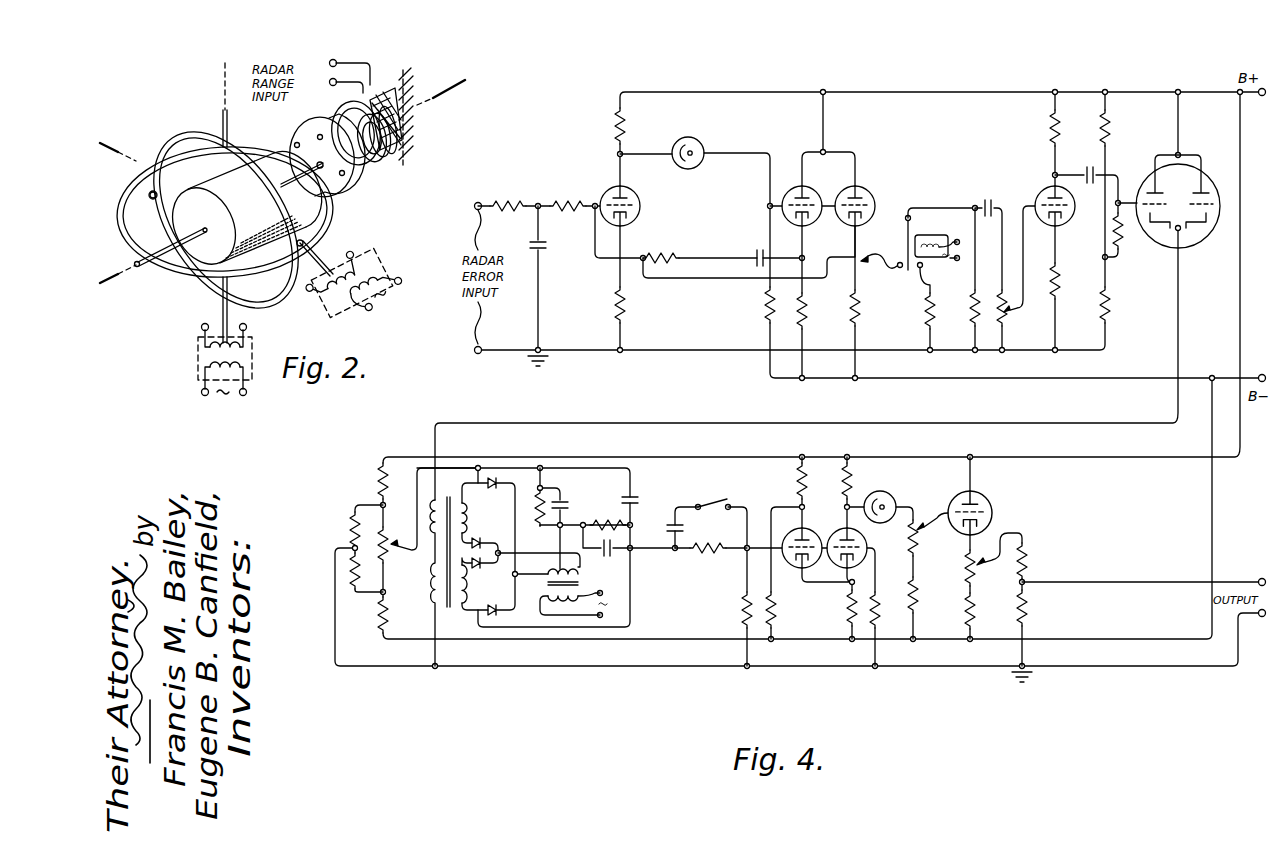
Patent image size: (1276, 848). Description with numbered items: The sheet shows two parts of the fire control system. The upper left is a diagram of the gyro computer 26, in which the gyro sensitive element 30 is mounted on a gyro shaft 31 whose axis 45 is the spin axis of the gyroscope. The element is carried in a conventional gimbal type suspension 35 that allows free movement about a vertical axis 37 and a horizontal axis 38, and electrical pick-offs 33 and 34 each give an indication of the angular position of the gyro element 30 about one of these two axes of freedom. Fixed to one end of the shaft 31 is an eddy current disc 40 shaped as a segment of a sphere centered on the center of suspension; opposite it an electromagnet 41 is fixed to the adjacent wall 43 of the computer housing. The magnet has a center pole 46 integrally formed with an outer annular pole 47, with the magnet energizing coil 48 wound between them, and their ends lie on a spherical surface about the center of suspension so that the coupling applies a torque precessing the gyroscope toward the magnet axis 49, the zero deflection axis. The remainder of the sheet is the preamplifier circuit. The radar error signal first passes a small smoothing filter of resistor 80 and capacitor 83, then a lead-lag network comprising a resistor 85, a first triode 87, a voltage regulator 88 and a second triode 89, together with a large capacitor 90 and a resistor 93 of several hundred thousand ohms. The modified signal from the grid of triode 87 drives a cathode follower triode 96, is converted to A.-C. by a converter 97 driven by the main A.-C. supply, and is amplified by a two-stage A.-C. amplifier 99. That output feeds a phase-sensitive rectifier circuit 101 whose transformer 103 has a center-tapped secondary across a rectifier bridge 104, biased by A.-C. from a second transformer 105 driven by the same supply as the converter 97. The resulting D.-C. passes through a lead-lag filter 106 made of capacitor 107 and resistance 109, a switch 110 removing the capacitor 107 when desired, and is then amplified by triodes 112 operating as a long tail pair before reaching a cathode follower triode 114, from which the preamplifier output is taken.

In FIG. 2, the gyro computer 26 is at (180, 298).
In FIG. 2, the gyro sensitive element 30 is at (213, 183).
In FIG. 2, the gyro shaft 31 is at (290, 178).
In FIG. 2, the electrical pick-off 33 is at (197, 360).
In FIG. 2, the electrical pick-off 34 is at (365, 262).
In FIG. 2, the gimbal type suspension 35 is at (153, 183).
In FIG. 2, the vertical axis 37 is at (224, 89).
In FIG. 2, the horizontal axis 38 is at (118, 162).
In FIG. 2, the eddy current disc 40 is at (357, 188).
In FIG. 2, the electromagnet 41 is at (386, 204).
In FIG. 2, the computer housing wall 43 is at (412, 133).
In FIG. 2, the spin axis 45 is at (118, 291).
In FIG. 2, the center pole 46 is at (378, 176).
In FIG. 2, the outer annular pole 47 is at (330, 117).
In FIG. 2, the magnet energizing coil 48 is at (397, 163).
In FIG. 2, the magnet axis 49 is at (444, 95).
In FIG. 4, the resistor 80 is at (504, 200).
In FIG. 4, the capacitor 83 is at (547, 247).
In FIG. 4, the resistor 85 is at (568, 200).
In FIG. 4, the first triode 87 is at (606, 192).
In FIG. 4, the voltage regulator 88 is at (675, 165).
In FIG. 4, the second triode 89 is at (797, 186).
In FIG. 4, the large capacitor 90 is at (758, 250).
In FIG. 4, the resistor 93 is at (661, 252).
In FIG. 4, the triode 96 is at (866, 194).
In FIG. 4, the converter 97 is at (893, 258).
In FIG. 4, the two-stage A.-C. amplifier 99 is at (1152, 273).
In FIG. 4, the phase-sensitive rectifier circuit 101 is at (601, 499).
In FIG. 4, the transformer 103 is at (440, 556).
In FIG. 4, the rectifier bridge 104 is at (508, 523).
In FIG. 4, the second transformer 105 is at (583, 580).
In FIG. 4, the lead-lag filter 106 is at (728, 536).
In FIG. 4, the capacitor 107 is at (668, 527).
In FIG. 4, the resistance 109 is at (708, 553).
In FIG. 4, the switch 110 is at (712, 502).
In FIG. 4, the triodes 112 is at (810, 530).
In FIG. 4, the triode 114 is at (984, 500).